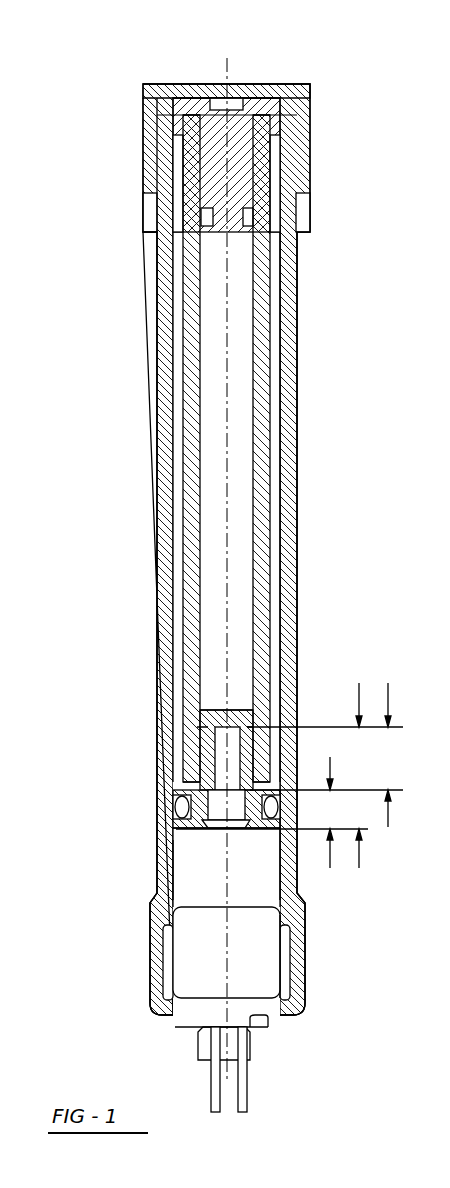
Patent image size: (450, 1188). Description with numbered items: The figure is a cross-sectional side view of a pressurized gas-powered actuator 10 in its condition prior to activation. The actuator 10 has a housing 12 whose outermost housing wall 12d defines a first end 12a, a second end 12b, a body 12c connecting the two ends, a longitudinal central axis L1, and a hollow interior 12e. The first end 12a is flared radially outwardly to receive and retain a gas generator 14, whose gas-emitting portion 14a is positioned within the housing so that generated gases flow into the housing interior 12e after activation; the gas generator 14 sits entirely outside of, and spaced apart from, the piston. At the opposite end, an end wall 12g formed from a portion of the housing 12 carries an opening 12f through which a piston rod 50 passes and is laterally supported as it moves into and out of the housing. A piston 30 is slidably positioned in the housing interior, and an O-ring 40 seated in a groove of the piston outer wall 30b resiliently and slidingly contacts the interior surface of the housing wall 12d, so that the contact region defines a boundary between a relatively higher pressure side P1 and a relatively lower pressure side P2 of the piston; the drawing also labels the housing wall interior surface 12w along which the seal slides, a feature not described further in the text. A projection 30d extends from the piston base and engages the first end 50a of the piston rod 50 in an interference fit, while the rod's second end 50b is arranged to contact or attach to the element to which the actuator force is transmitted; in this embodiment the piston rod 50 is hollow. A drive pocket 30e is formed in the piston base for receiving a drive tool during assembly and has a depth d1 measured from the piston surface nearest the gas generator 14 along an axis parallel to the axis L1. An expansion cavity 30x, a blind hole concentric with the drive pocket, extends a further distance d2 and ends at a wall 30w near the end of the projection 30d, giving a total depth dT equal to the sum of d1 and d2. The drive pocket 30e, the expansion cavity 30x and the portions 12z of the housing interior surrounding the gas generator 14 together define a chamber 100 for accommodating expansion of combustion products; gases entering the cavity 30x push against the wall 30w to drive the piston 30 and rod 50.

The actuator 10 is at (75, 477).
The housing 12 is at (152, 259).
The first end 12a is at (148, 939).
The second end 12b is at (157, 137).
The body 12c is at (287, 355).
The outermost housing wall 12d is at (157, 370).
The hollow interior 12e is at (290, 882).
The opening 12f is at (187, 120).
The end wall 12g is at (283, 123).
The housing inner wall 12w is at (282, 517).
The portions of the housing interior 12z is at (207, 880).
The gas generator 14 is at (190, 1015).
The gas-emitting portion 14a is at (262, 877).
The piston 30 is at (190, 848).
The outer wall 30b is at (208, 795).
The projection 30d is at (196, 757).
The drive pocket 30e is at (232, 810).
The wall 30w is at (240, 713).
The expansion cavity 30x is at (214, 775).
The O-ring 40 is at (178, 808).
The piston rod 50 is at (260, 272).
The first end 50a is at (190, 748).
The second end 50b is at (193, 148).
The chamber 100 is at (190, 883).
The higher pressure side P1 is at (190, 868).
The lower pressure side P2 is at (173, 425).
The longitudinal central axis L1 is at (227, 75).
The depth d1 is at (326, 780).
The distance d2 is at (325, 693).
The total depth dT is at (275, 861).